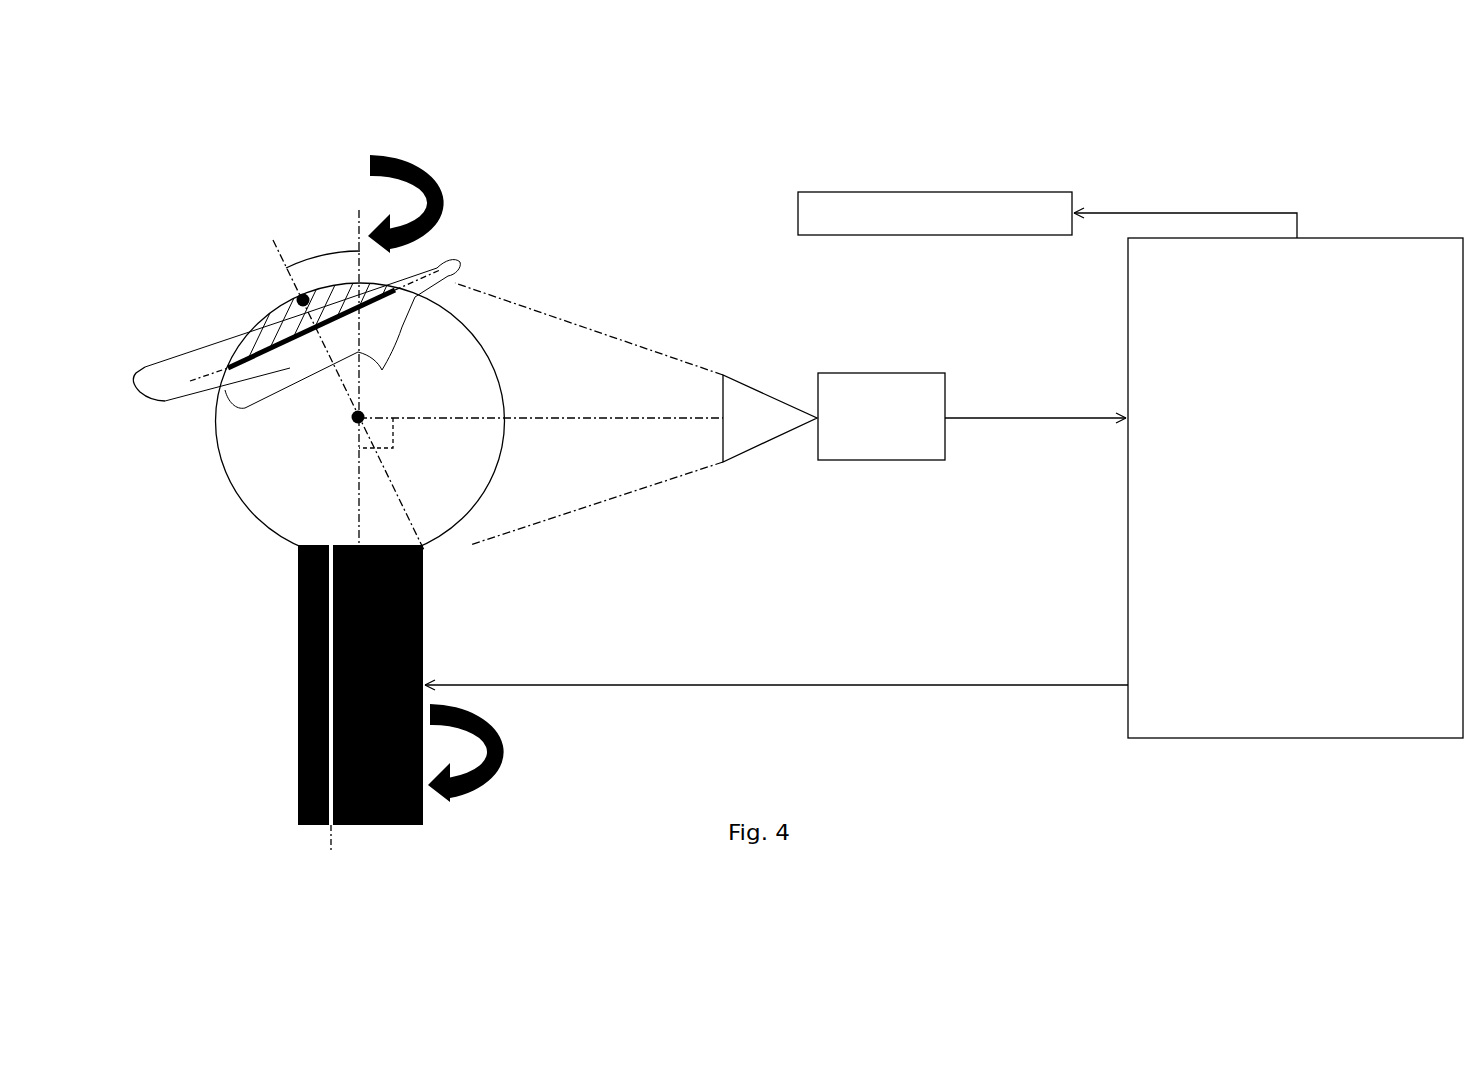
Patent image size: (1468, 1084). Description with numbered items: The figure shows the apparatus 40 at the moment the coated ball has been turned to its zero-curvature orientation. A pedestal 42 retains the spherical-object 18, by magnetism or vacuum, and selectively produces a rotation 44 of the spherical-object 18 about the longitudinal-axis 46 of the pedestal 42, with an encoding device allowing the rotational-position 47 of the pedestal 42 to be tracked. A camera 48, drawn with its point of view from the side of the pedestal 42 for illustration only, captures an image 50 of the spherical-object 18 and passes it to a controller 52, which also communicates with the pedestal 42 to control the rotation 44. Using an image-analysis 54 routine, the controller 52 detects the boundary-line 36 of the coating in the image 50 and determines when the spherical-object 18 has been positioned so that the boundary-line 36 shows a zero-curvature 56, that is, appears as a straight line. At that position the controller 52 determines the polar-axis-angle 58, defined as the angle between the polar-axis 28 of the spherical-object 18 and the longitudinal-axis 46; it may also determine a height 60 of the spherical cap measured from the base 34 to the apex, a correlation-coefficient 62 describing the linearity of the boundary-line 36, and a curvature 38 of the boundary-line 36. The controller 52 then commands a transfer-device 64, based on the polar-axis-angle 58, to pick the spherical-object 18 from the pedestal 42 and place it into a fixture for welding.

The spherical-object 18 is at (260, 520).
The polar-axis 28 is at (275, 257).
The base 34 is at (263, 352).
The boundary-line 36 is at (240, 355).
The curvature 38 is at (1229, 467).
The apparatus 40 is at (1365, 120).
The pedestal 42 is at (298, 775).
The rotation 44 is at (475, 112).
The longitudinal-axis 46 is at (363, 268).
The rotational-position 47 is at (400, 842).
The camera 48 is at (880, 462).
The image 50 is at (1017, 418).
The controller 52 is at (1398, 291).
The image-analysis 54 is at (1257, 331).
The zero-curvature 56 is at (393, 352).
The polar-axis-angle 58 is at (341, 248).
The height 60 is at (128, 393).
The correlation-coefficient 62 is at (480, 252).
The transfer-device 64 is at (1047, 215).